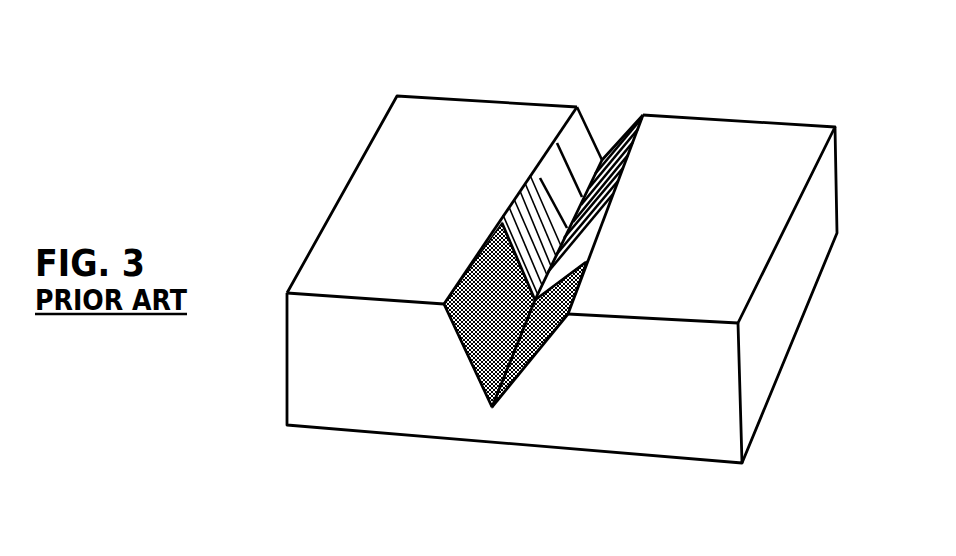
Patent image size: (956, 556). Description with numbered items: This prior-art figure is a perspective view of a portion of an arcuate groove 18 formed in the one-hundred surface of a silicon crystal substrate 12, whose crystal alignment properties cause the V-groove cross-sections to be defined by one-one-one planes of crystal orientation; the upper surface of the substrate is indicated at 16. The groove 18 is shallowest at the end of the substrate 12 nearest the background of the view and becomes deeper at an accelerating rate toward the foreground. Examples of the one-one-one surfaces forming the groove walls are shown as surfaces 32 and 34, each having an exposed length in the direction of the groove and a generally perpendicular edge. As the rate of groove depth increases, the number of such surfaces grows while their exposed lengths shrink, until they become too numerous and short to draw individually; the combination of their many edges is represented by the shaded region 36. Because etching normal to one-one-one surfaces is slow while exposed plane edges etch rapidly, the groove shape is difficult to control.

The silicon crystal substrate 12 is at (663, 413).
The top surface of workpiece 16 is at (730, 150).
The arcuate groove 18 is at (610, 115).
The 111 surface 32 is at (560, 160).
The 111 surface 34 is at (540, 197).
The shaded region 36 is at (468, 352).